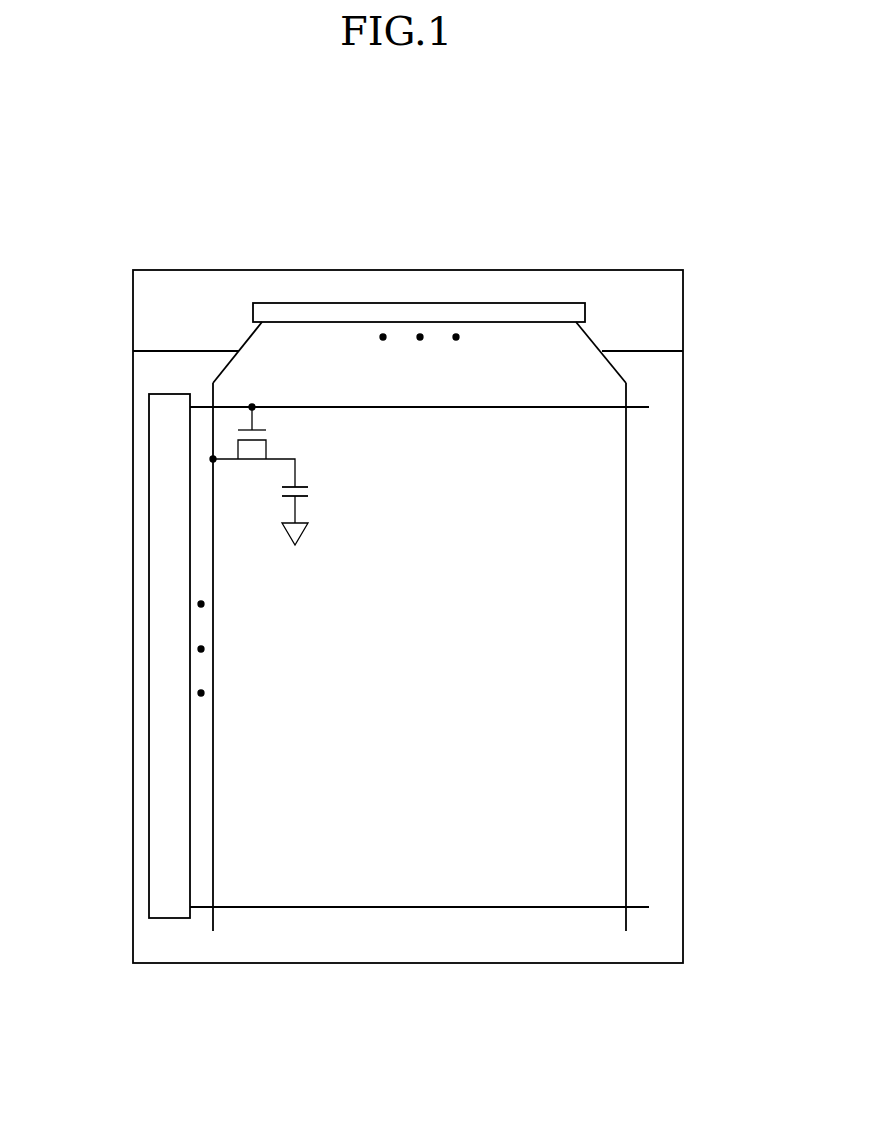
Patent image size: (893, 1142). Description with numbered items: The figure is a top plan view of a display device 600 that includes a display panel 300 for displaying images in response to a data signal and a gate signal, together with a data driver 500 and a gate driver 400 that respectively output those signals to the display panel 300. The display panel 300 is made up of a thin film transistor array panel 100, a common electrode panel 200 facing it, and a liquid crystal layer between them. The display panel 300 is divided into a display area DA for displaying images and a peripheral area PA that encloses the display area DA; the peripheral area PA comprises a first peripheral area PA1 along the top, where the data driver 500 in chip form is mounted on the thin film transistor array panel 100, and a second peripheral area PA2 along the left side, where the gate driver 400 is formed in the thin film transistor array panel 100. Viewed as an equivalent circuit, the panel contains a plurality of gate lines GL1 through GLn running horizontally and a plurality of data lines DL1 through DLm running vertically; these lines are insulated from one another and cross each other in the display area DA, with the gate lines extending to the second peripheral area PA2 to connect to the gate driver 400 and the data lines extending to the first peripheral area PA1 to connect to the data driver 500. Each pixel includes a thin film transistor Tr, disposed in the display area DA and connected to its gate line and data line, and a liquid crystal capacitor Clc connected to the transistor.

The display device 600 is at (383, 201).
The thin film transistor array panel 100 is at (653, 311).
The common electrode panel 200 is at (653, 378).
The display panel 300 is at (746, 302).
The gate driver 400 is at (149, 823).
The data driver 500 is at (411, 303).
The peripheral area PA is at (48, 302).
The first peripheral area PA1 is at (175, 300).
The second peripheral area PA2 is at (140, 586).
The display area DA is at (590, 650).
The gate line GL1 is at (441, 410).
The gate line GLn is at (441, 907).
The data line DL1 is at (214, 847).
The data line DLm is at (625, 849).
The thin film transistor Tr is at (292, 437).
The liquid crystal capacitor Clc is at (316, 512).